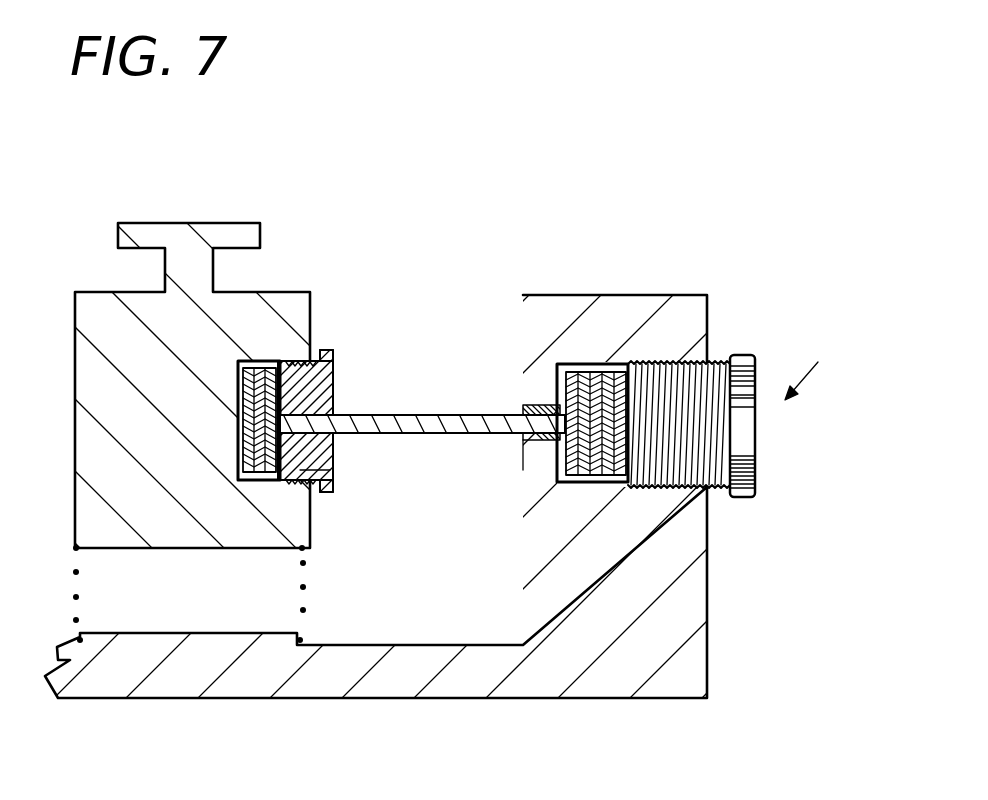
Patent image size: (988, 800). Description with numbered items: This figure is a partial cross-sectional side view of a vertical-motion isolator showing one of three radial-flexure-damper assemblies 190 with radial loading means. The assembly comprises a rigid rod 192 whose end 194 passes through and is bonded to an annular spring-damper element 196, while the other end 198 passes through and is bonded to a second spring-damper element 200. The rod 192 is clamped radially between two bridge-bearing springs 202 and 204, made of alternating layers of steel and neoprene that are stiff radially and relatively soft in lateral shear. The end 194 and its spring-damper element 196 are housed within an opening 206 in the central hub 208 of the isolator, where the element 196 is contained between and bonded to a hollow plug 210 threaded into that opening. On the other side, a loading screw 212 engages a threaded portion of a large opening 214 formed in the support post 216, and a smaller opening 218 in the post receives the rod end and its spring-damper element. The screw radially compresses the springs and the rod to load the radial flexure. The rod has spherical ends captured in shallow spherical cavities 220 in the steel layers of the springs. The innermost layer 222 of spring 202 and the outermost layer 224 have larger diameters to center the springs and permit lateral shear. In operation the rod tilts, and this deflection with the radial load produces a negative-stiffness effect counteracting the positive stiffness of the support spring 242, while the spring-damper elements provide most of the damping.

The radial-flexure-damper assembly 190 is at (821, 363).
The rigid rod 192 is at (428, 416).
The end of the rod 194 is at (320, 353).
The annular spring-damper element 196 is at (333, 405).
The other end of the rod 198 is at (521, 452).
The second spring-damper element 200 is at (523, 405).
The bridge-bearing spring 202 is at (310, 537).
The bridge-bearing spring 204 is at (607, 482).
The opening 206 is at (283, 363).
The central hub 208 is at (170, 507).
The hollow plug 210 is at (410, 545).
The loading screw 212 is at (745, 355).
The large opening 214 is at (665, 362).
The support post 216 is at (697, 656).
The smaller opening 218 is at (541, 440).
The shallow spherical cavities 220 is at (553, 405).
The innermost layer 222 is at (262, 362).
The outermost layer 224 is at (568, 487).
The support spring 242 is at (80, 620).